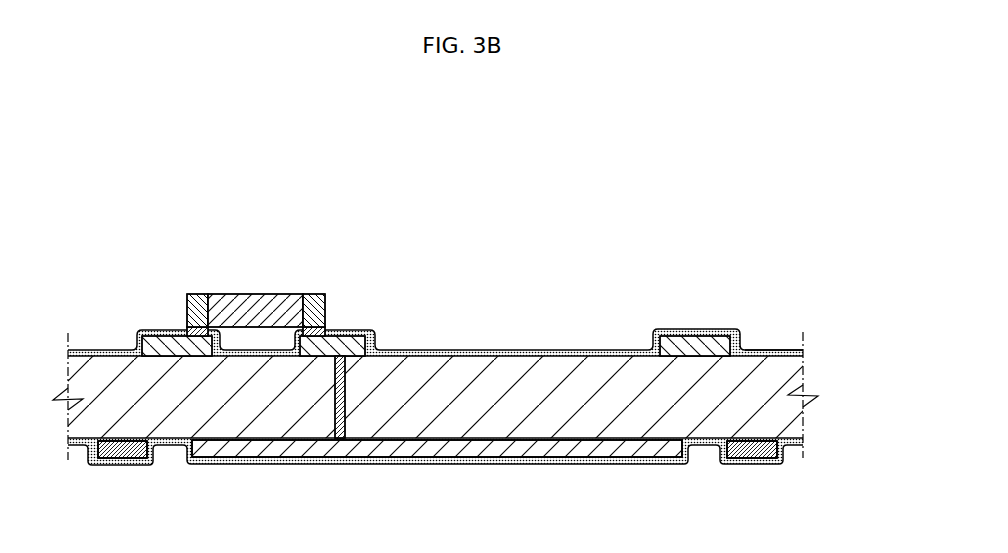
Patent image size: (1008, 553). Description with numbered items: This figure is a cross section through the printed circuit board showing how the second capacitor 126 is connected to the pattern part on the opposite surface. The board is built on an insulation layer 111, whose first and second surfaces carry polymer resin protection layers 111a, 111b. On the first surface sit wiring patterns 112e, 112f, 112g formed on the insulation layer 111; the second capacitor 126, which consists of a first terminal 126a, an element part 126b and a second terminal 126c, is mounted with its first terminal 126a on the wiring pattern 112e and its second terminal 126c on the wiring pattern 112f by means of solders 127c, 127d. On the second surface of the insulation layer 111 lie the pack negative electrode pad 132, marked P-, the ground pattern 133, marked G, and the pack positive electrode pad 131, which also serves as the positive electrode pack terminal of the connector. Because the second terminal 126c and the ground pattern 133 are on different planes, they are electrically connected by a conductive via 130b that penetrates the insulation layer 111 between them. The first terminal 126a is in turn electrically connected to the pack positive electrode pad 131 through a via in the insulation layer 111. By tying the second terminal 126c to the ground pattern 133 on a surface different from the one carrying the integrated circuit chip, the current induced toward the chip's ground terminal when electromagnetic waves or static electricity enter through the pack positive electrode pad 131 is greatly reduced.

The insulation layer 111 is at (797, 377).
The protection layer 111a is at (740, 345).
The protection layer 111b is at (782, 450).
The wiring pattern 112e is at (130, 347).
The wiring pattern 112f is at (387, 350).
The insulating layer portion 112g is at (700, 333).
The second capacitor 126 is at (256, 257).
The first terminal 126a is at (198, 296).
The element part 126b is at (258, 297).
The second terminal 126c is at (301, 293).
The solder 127c is at (185, 331).
The conductive pad 127d is at (343, 331).
The conductive via 130b is at (335, 400).
The pack positive electrode pad 131 is at (725, 462).
The pack negative electrode pad 132 is at (102, 465).
The ground pattern 133 is at (527, 450).
The gate G is at (370, 452).
The P- region P- is at (137, 458).